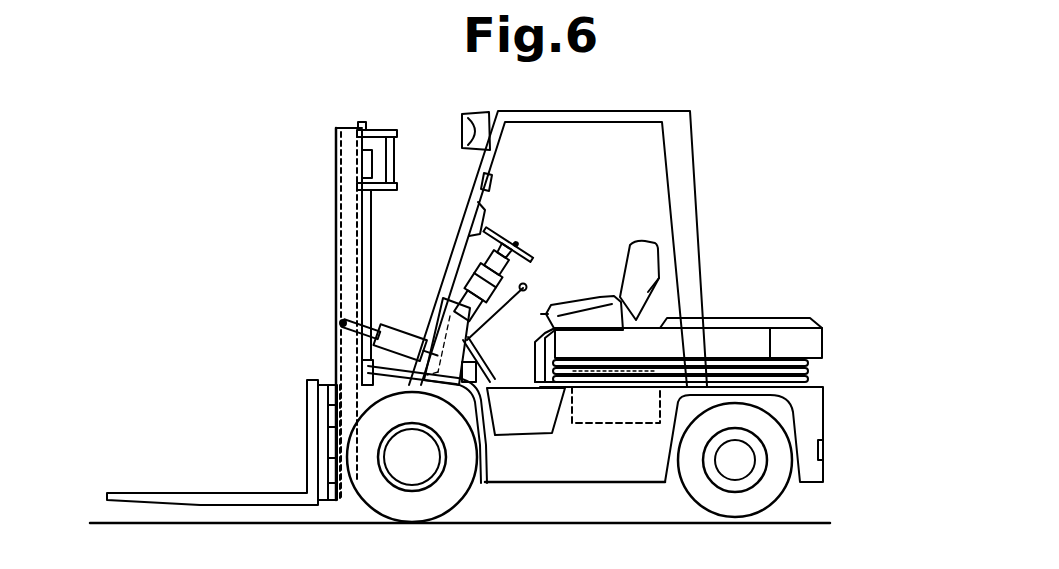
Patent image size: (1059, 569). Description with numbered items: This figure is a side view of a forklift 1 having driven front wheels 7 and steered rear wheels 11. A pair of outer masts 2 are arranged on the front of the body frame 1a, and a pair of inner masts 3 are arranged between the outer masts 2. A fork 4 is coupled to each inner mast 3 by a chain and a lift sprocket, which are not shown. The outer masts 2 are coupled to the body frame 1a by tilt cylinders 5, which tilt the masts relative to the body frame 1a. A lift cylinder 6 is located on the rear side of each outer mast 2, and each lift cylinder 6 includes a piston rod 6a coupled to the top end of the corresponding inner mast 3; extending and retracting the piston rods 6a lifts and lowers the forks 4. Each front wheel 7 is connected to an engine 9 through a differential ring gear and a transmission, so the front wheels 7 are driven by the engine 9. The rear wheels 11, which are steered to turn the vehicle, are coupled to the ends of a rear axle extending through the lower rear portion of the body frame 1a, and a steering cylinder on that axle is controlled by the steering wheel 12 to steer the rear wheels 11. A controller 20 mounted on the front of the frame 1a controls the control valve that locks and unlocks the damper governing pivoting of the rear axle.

The forklift 1 is at (753, 135).
The body frame 1a is at (593, 473).
The outer mast 2 is at (334, 158).
The inner mast 3 is at (334, 129).
The fork 4 is at (177, 494).
The tilt cylinder 5 is at (398, 344).
The lift cylinder 6 is at (371, 206).
The piston rod 6a is at (372, 157).
The front wheel 7 is at (455, 495).
The engine 9 is at (616, 429).
The rear wheel 11 is at (772, 502).
The steering wheel 12 is at (532, 257).
The controller 20 is at (438, 298).